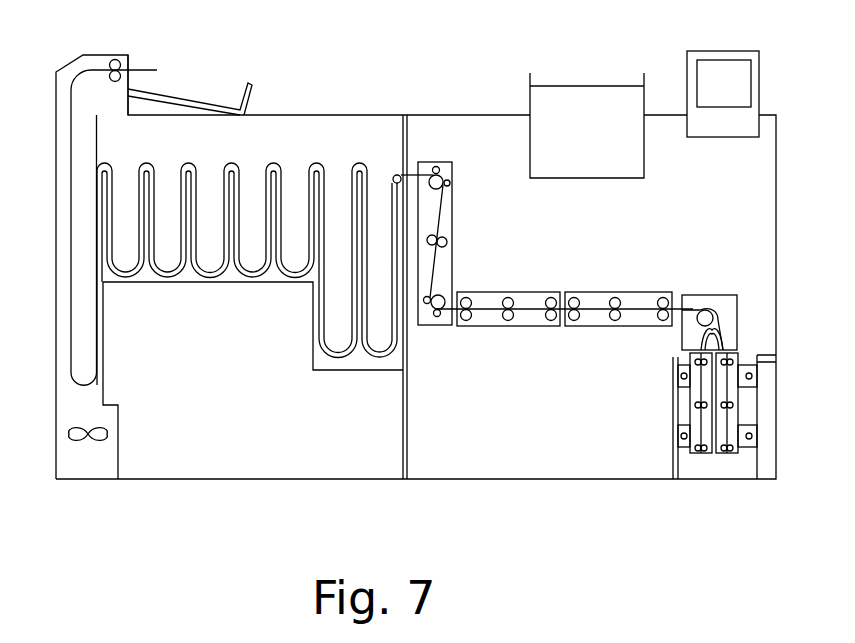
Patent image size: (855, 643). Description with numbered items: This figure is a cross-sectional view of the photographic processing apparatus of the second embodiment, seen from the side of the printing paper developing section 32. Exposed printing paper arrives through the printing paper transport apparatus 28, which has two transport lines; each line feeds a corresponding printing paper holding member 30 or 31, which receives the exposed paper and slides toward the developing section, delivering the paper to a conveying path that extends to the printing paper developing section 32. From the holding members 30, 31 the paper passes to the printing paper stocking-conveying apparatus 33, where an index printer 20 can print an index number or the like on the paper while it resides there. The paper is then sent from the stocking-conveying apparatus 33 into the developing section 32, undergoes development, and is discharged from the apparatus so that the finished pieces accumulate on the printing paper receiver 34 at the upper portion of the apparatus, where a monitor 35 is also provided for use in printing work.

The index printer 20 is at (581, 102).
The printing paper transport apparatus 28 is at (731, 446).
The printing paper holding member 30 is at (732, 440).
The printing paper holding member 31 is at (705, 442).
The printing paper developing section 32 is at (373, 75).
The printing paper stocking-conveying apparatus 33 is at (630, 322).
The printing paper receiver 34 is at (160, 95).
The monitor 35 is at (727, 57).